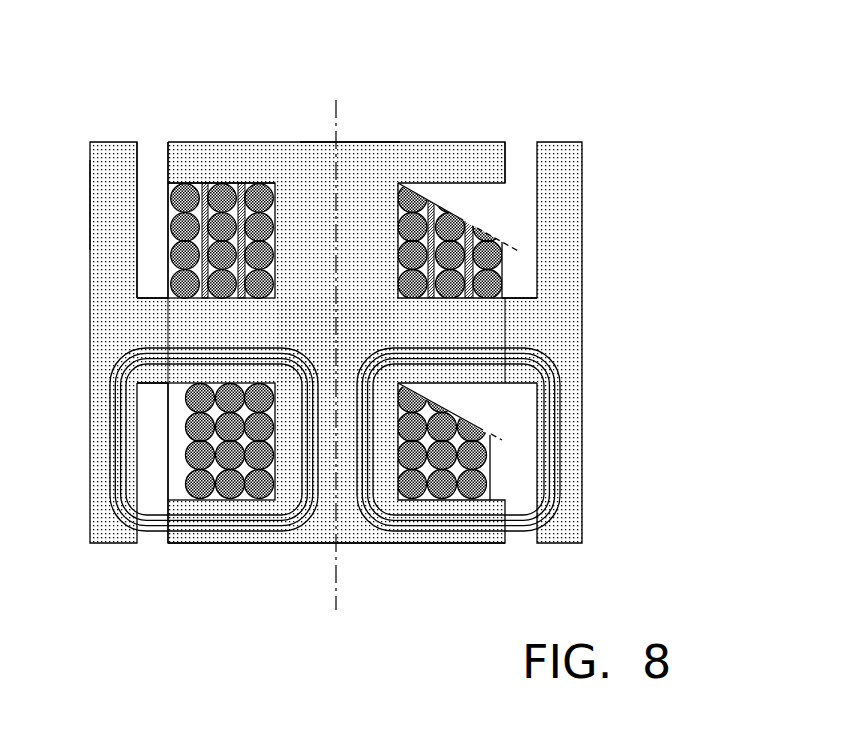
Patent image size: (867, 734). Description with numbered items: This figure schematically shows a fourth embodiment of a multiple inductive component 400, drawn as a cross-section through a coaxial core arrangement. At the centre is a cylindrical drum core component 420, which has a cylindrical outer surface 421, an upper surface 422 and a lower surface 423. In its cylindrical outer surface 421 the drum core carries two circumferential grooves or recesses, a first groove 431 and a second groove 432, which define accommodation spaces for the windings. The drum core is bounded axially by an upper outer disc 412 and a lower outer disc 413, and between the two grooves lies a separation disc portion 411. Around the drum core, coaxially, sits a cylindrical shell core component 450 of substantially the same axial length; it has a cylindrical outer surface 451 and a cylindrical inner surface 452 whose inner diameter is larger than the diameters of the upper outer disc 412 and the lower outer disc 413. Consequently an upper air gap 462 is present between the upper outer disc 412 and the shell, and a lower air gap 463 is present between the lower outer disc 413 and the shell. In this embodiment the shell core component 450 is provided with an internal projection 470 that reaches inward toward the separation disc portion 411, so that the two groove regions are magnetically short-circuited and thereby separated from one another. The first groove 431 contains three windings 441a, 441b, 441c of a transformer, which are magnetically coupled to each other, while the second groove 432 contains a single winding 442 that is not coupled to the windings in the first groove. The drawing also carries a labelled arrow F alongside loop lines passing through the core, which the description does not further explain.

The multiple inductive component 400 is at (702, 66).
The separation disc portion 411 is at (200, 327).
The upper outer disc 412 is at (468, 160).
The lower outer disc 413 is at (448, 533).
The cylindrical drum core component 420 is at (223, 558).
The cylindrical outer surface 421 is at (507, 143).
The upper surface 422 is at (391, 142).
The lower surface 423 is at (380, 543).
The first groove 431 is at (478, 205).
The second groove 432 is at (469, 400).
The winding 441a is at (413, 228).
The winding 441b is at (452, 257).
The winding 441c is at (492, 285).
The winding 442 is at (443, 453).
The cylindrical shell core component 450 is at (97, 557).
The cylindrical outer surface 451 is at (90, 202).
The cylindrical inner surface 452 is at (138, 205).
The upper air gap 462 is at (152, 162).
The lower air gap 463 is at (153, 537).
The internal projection 470 is at (522, 323).
The magnetic flux F is at (98, 447).